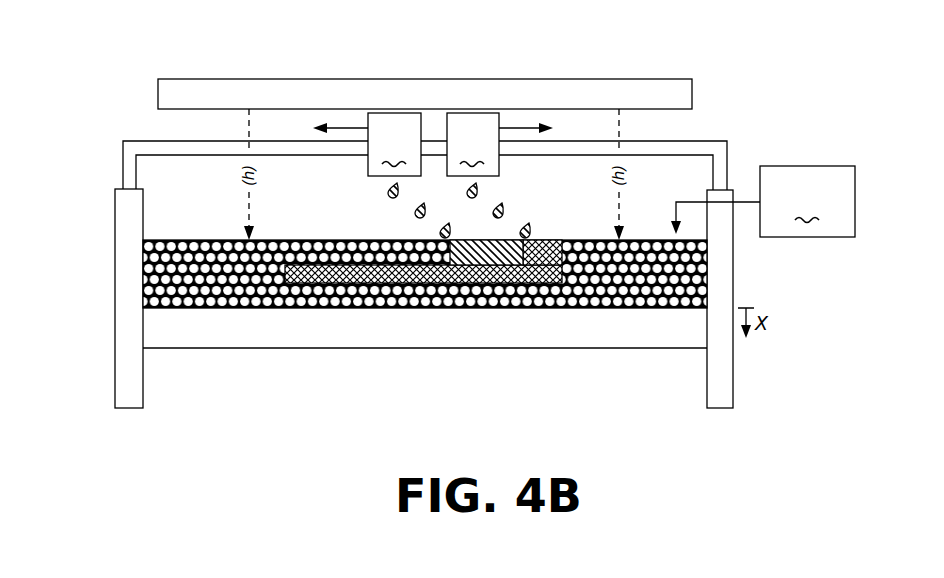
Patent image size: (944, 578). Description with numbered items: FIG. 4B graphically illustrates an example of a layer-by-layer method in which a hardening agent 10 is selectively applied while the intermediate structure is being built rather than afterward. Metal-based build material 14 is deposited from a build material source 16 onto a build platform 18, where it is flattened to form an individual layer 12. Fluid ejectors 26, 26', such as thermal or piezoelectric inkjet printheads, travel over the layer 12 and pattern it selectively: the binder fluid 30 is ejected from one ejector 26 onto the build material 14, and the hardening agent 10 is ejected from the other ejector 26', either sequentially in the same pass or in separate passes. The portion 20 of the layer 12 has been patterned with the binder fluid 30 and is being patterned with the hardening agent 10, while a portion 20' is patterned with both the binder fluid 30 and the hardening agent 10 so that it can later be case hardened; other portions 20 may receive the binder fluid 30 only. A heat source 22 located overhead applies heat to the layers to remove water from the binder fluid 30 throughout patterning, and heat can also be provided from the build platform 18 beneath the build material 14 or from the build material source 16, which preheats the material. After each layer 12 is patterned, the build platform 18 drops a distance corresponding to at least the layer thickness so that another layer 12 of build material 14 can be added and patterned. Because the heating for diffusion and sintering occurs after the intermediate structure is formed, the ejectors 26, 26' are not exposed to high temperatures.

The hardening agent 10 is at (506, 208).
The layer 12 is at (136, 290).
The metal-based build material 14 is at (197, 240).
The build material source 16 is at (763, 201).
The build platform 18 is at (592, 323).
The patterned portion 20 is at (474, 318).
The portion patterned with binder fluid and hardening agent 20' is at (446, 295).
The heat source 22 is at (680, 92).
The fluid ejector 26 is at (367, 144).
The second fluid ejector 26' is at (500, 144).
The binder fluid 30 is at (386, 193).